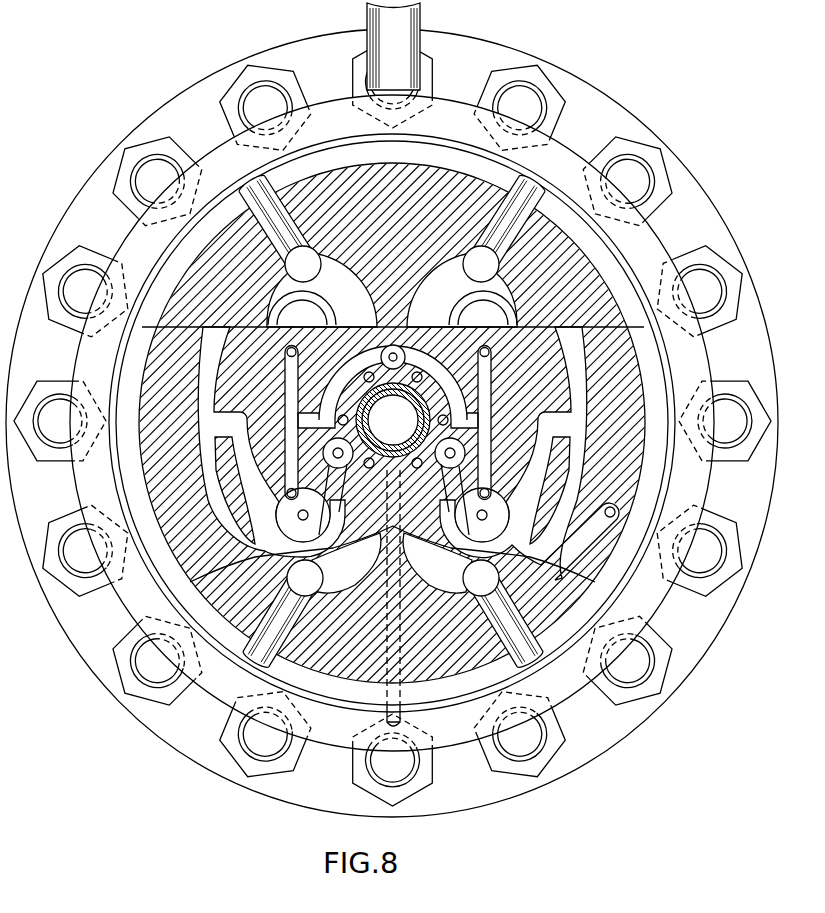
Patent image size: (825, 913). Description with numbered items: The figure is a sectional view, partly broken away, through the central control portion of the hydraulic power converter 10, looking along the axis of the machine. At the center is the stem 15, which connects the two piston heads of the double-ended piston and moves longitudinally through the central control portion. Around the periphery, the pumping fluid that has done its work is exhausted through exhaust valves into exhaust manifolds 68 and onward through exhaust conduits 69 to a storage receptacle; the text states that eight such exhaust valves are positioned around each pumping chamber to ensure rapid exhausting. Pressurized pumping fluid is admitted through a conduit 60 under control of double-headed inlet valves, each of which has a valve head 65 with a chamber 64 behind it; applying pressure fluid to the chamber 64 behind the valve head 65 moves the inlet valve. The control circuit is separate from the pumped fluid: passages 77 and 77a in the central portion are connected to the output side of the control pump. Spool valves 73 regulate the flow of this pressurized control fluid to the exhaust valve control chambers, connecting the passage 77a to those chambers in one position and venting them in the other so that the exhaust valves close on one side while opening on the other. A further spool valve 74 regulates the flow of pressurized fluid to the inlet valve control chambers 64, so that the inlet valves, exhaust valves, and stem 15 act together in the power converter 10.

The hydraulic power converter 10 is at (658, 120).
The stem 15 is at (408, 433).
The conduit 60 is at (270, 180).
The chamber 64 is at (392, 423).
The valve head 65 is at (326, 321).
The exhaust manifold 68 is at (207, 150).
The exhaust conduit 69 is at (421, 12).
The spool valve 73 is at (394, 486).
The spool valve 74 is at (381, 358).
The passage 77 is at (215, 429).
The passage 77a is at (388, 423).